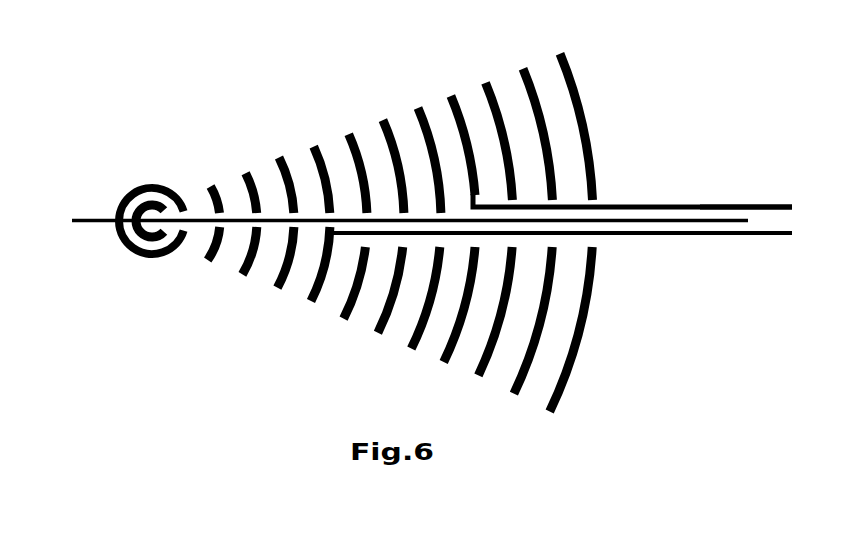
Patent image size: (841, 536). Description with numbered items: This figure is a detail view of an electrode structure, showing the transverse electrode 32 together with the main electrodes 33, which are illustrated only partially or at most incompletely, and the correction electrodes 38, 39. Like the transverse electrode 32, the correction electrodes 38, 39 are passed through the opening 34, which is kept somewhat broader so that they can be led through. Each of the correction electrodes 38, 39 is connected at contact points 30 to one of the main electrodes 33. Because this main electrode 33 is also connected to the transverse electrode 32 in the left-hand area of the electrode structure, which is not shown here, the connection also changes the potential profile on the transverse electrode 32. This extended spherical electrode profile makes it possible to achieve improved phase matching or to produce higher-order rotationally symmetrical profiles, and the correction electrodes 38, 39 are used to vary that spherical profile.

The contact points 30 is at (462, 185).
The transverse electrode 32 is at (92, 230).
The main electrodes 33 is at (132, 252).
The opening 34 is at (620, 198).
The correction electrode 38 is at (615, 235).
The correction electrode 39 is at (707, 208).